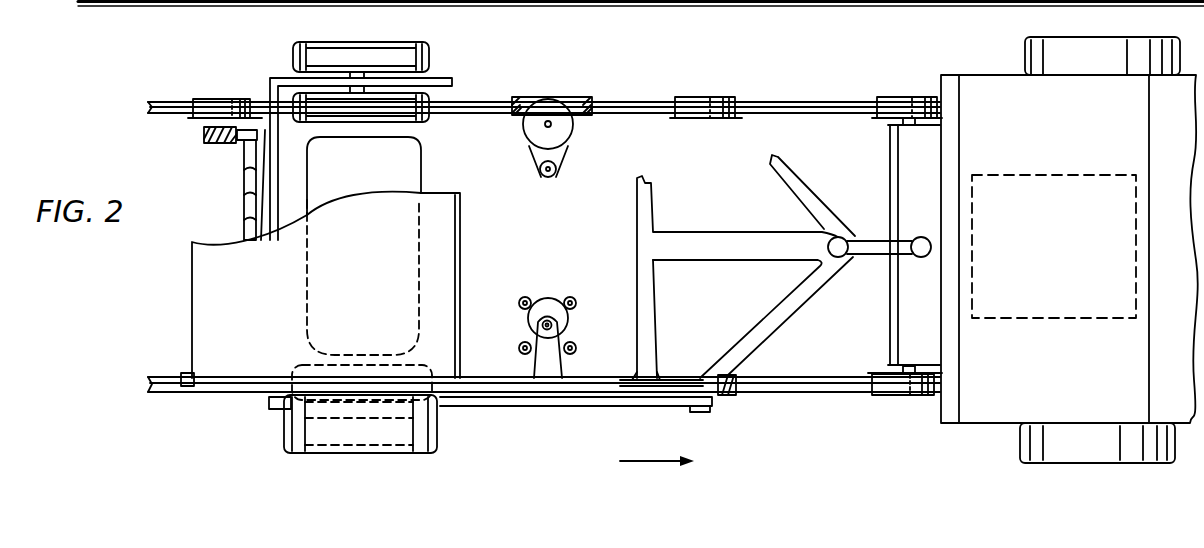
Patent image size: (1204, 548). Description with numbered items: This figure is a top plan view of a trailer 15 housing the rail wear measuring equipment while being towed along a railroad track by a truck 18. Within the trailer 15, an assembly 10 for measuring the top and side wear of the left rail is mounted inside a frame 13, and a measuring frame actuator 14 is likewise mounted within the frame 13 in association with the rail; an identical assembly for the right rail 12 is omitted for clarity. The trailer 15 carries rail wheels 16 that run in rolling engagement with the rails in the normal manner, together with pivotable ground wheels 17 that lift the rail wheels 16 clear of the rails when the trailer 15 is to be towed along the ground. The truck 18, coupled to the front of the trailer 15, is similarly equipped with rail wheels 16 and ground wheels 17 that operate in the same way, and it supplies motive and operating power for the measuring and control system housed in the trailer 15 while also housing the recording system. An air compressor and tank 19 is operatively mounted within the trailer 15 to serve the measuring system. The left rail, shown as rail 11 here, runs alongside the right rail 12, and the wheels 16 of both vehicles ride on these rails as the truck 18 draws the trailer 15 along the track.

The assembly 10 is at (518, 162).
The upper guide rail 11 is at (168, 102).
The right rail 12 is at (164, 392).
The frame 13 is at (606, 80).
The measuring frame actuator 14 is at (558, 275).
The trailer 15 is at (152, 316).
The rail wheels 16 is at (193, 120).
The ground wheels 17 is at (432, 60).
The truck 18 is at (1052, 474).
The air compressor and tank 19 is at (422, 172).